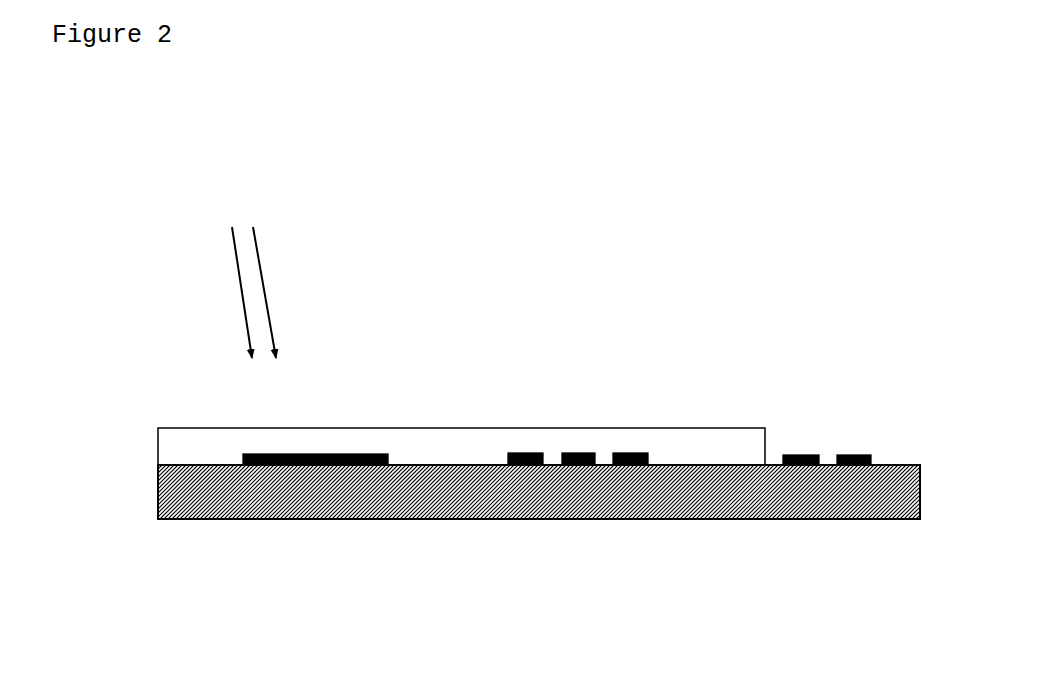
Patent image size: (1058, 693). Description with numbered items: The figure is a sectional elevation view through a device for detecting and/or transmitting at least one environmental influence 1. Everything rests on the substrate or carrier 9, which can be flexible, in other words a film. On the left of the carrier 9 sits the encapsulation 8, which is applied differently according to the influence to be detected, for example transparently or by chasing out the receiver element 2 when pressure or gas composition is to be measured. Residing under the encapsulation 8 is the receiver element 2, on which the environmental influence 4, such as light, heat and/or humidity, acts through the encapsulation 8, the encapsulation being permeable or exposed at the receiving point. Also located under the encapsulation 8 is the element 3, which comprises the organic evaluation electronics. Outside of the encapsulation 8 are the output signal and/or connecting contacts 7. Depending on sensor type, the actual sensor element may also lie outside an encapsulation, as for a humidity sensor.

The device for detecting and/or transmitting at least one environmental influence 1 is at (241, 571).
The receiver element 2 is at (308, 453).
The element comprising the organic evaluation electronics 3 is at (583, 448).
The environmental influence 4 is at (254, 247).
The output signal and/or connecting contacts 7 is at (860, 453).
The encapsulation 8 is at (190, 438).
The substrate or carrier 9 is at (605, 520).